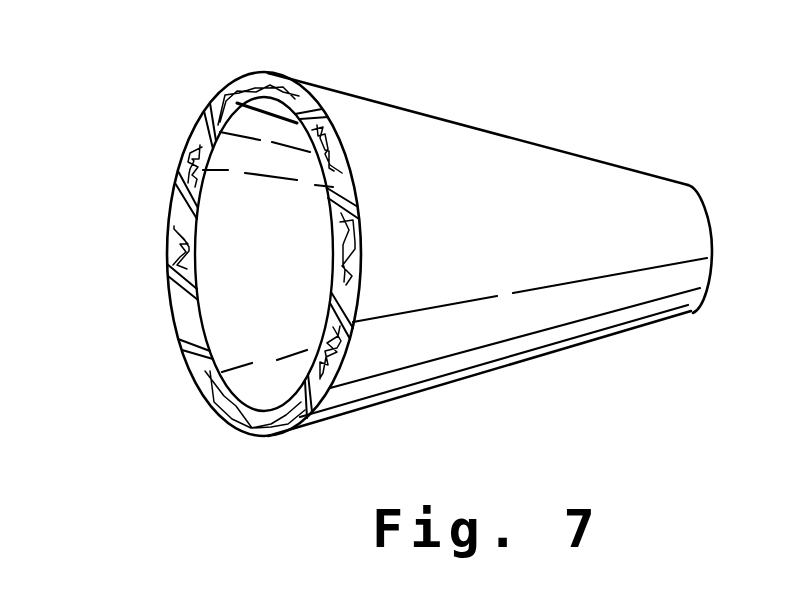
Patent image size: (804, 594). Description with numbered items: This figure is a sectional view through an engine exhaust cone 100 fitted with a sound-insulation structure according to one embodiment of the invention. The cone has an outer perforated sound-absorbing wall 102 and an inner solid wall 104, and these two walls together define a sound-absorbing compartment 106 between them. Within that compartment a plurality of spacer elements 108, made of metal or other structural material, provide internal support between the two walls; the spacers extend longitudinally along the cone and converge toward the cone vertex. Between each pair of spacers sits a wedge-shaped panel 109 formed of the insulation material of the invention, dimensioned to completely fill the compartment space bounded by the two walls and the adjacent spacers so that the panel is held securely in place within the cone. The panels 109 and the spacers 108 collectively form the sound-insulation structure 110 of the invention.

The engine exhaust cone 100 is at (505, 188).
The outer perforated sound-absorbing wall 102 is at (180, 168).
The inner solid wall 104 is at (193, 252).
The sound-absorbing compartment 106 is at (230, 88).
The spacer elements 108 is at (310, 407).
The wedge-shaped panels 109 is at (350, 412).
The sound-insulation structure 110 is at (165, 275).